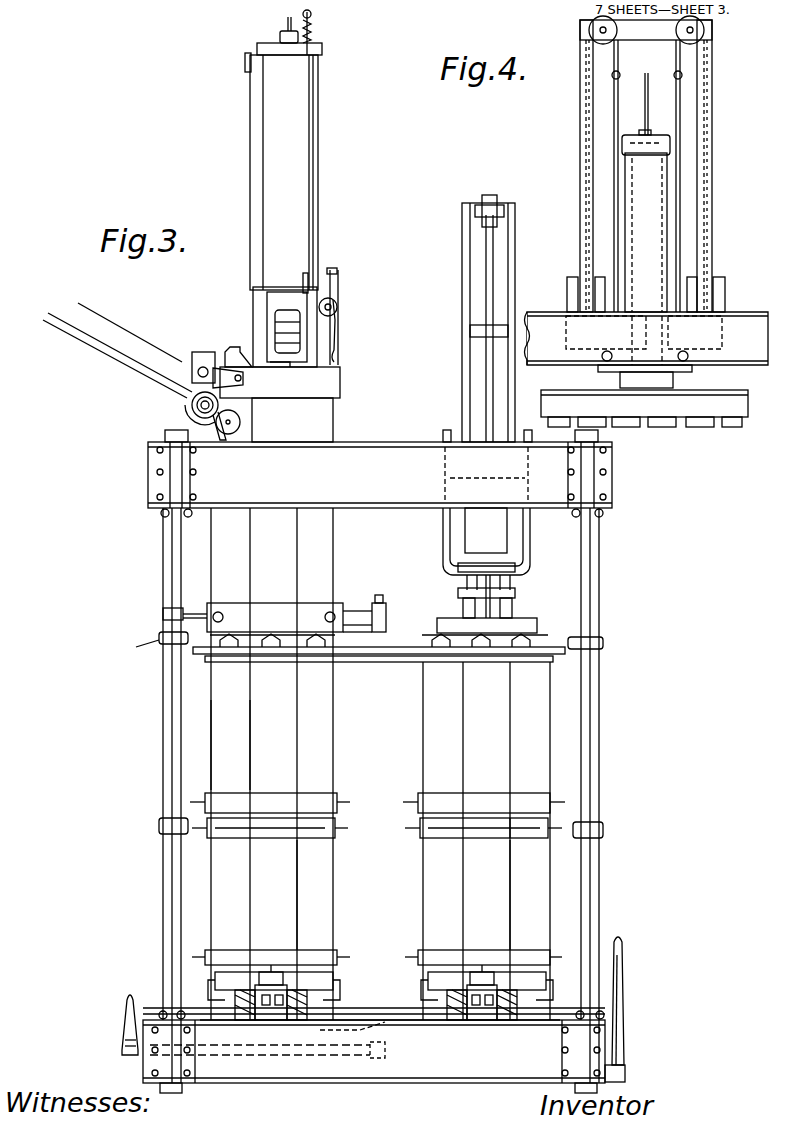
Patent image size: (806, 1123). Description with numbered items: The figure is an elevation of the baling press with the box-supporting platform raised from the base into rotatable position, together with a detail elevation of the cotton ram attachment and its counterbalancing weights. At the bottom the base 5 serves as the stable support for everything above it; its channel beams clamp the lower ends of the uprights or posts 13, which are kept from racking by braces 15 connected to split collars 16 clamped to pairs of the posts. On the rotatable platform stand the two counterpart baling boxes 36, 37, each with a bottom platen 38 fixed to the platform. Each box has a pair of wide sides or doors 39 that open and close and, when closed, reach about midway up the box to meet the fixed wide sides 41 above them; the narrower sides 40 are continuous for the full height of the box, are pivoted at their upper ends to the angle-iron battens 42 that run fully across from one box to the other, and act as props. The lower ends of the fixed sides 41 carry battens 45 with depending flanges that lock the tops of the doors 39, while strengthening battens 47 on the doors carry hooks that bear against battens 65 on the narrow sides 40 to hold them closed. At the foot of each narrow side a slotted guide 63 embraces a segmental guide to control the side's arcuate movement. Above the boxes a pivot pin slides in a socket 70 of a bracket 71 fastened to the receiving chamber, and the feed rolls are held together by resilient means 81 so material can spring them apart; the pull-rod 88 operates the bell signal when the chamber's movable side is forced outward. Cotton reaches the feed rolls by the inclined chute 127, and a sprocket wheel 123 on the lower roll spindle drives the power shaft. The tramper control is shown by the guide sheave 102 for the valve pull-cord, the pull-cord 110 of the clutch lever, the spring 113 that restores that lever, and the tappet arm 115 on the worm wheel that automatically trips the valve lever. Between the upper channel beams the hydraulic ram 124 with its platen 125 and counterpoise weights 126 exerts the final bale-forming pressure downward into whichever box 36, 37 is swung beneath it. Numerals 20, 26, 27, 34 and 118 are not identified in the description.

In FIG. 3, the base 5 is at (430, 1076).
In FIG. 3, the uprights or posts 13 is at (162, 894).
In FIG. 3, the braces 15 is at (160, 713).
In FIG. 3, the split collars 16 is at (155, 638).
In FIG. 3, the base beam 20 is at (380, 1037).
In FIG. 3, the connecting rod 26 is at (293, 1060).
In FIG. 3, the lever 27 is at (122, 1031).
In FIG. 3, the hand lever 34 is at (625, 1006).
In FIG. 3, the baling box 36 is at (488, 895).
In FIG. 3, the baling box 37 is at (197, 745).
In FIG. 3, the bottom platen 38 is at (330, 998).
In FIG. 3, the wide sides or doors 39 is at (318, 889).
In FIG. 3, the narrower sides 40 is at (212, 989).
In FIG. 3, the fixed wide sides or side members 41 is at (420, 751).
In FIG. 3, the battens 42 is at (375, 662).
In FIG. 3, the battens 45 is at (418, 799).
In FIG. 3, the strengthening and connecting battens 47 is at (420, 833).
In FIG. 3, the slotted guide 63 is at (500, 985).
In FIG. 3, the battens 65 is at (512, 838).
In FIG. 3, the socket 70 is at (385, 616).
In FIG. 3, the bracket 71 is at (350, 611).
In FIG. 3, the resilient means 81 is at (198, 352).
In FIG. 3, the pull-rod 88 is at (218, 445).
In FIG. 3, the guide sheave 102 is at (336, 278).
In FIG. 3, the pull-cord 110 is at (318, 340).
In FIG. 3, the spring 113 is at (260, 383).
In FIG. 3, the tappet arm 115 is at (303, 283).
In FIG. 3, the trip lever 118 is at (248, 352).
In FIG. 3, the sprocket wheel 123 is at (200, 410).
In FIG. 3, the hydraulic ram 124 is at (470, 383).
In FIG. 4, the hydraulic ram 124 is at (635, 196).
In FIG. 3, the platen 125 is at (525, 620).
In FIG. 4, the platen 125 is at (663, 412).
In FIG. 4, the counterpoise weights 126 is at (567, 287).
In FIG. 3, the inclined chute 127 is at (85, 352).